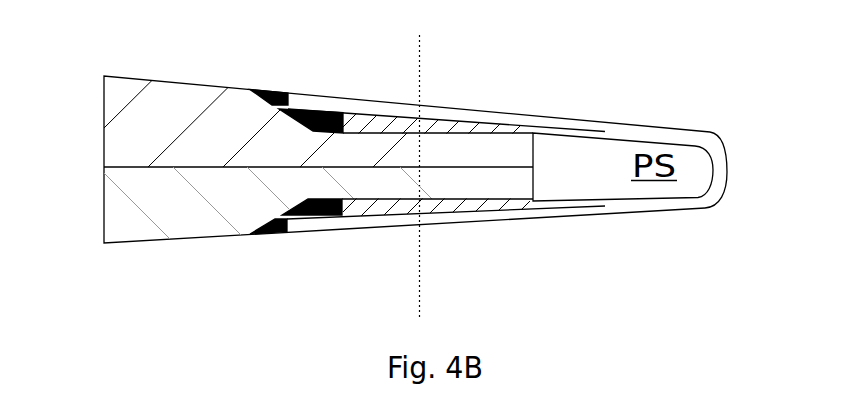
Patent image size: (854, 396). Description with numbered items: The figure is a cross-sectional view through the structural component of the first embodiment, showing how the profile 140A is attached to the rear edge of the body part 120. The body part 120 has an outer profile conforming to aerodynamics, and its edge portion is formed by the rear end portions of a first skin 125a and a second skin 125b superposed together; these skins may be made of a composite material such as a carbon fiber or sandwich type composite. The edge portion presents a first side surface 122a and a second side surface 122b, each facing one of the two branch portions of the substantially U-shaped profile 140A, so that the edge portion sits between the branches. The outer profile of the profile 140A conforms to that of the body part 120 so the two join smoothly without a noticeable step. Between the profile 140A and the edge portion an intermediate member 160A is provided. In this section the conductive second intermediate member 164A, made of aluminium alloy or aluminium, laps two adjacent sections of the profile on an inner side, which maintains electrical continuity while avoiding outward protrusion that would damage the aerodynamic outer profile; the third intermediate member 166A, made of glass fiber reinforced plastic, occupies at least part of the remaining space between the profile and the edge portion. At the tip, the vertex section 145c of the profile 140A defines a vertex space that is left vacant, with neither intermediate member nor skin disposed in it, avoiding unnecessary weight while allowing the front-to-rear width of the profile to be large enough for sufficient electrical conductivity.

The body part 120 is at (143, 236).
The first skin 125a is at (218, 137).
The second skin 125b is at (218, 207).
The intermediate member 160A is at (368, 160).
The second intermediate member 164A is at (383, 125).
The third intermediate member 166A is at (358, 200).
The first side surface 122a is at (443, 132).
The second side surface 122b is at (448, 200).
The profile 140A is at (630, 133).
The vertex section 145c is at (702, 200).